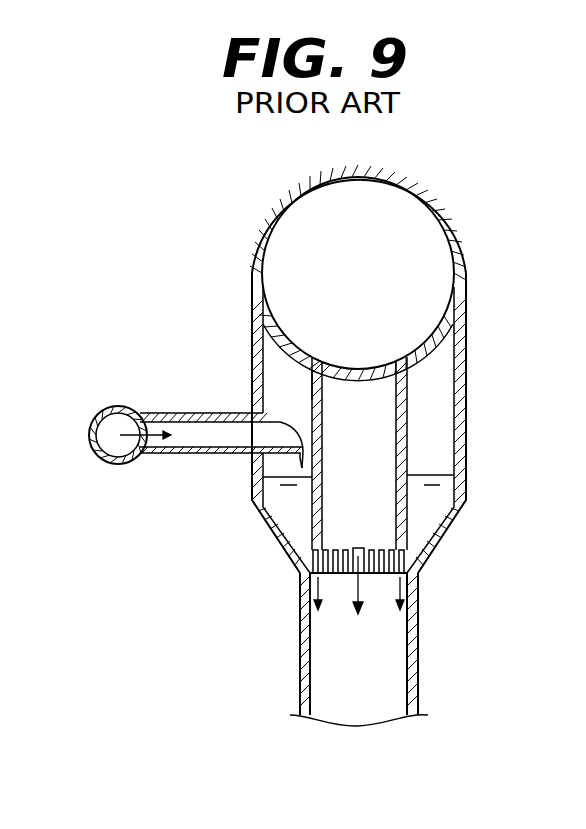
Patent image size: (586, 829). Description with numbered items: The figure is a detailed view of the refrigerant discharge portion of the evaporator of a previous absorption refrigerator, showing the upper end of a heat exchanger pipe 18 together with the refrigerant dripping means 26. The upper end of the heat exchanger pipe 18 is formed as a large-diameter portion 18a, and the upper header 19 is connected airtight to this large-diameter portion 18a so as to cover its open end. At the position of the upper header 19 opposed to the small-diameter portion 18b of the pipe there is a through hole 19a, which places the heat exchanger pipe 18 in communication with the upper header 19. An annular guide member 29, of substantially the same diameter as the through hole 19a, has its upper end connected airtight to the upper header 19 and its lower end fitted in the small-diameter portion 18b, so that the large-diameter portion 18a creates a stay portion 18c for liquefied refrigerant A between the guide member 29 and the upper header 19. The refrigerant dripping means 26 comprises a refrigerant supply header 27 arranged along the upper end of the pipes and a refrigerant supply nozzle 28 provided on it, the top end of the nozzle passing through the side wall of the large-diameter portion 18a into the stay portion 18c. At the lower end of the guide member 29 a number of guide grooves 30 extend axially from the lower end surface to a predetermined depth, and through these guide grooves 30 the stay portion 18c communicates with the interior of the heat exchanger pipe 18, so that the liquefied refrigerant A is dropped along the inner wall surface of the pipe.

The heat exchanger pipe 18 is at (418, 693).
The large-diameter portion 18a is at (466, 330).
The small-diameter portion 18b is at (418, 635).
The stay portion 18c is at (438, 407).
The upper header 19 is at (453, 222).
The through hole 19a is at (357, 370).
The refrigerant dripping means 26 is at (193, 413).
The refrigerant supply header 27 is at (98, 464).
The refrigerant supply nozzle 28 is at (180, 455).
The guide member 29 is at (312, 385).
The guide grooves 30 is at (375, 552).
The liquefied refrigerant A is at (430, 473).